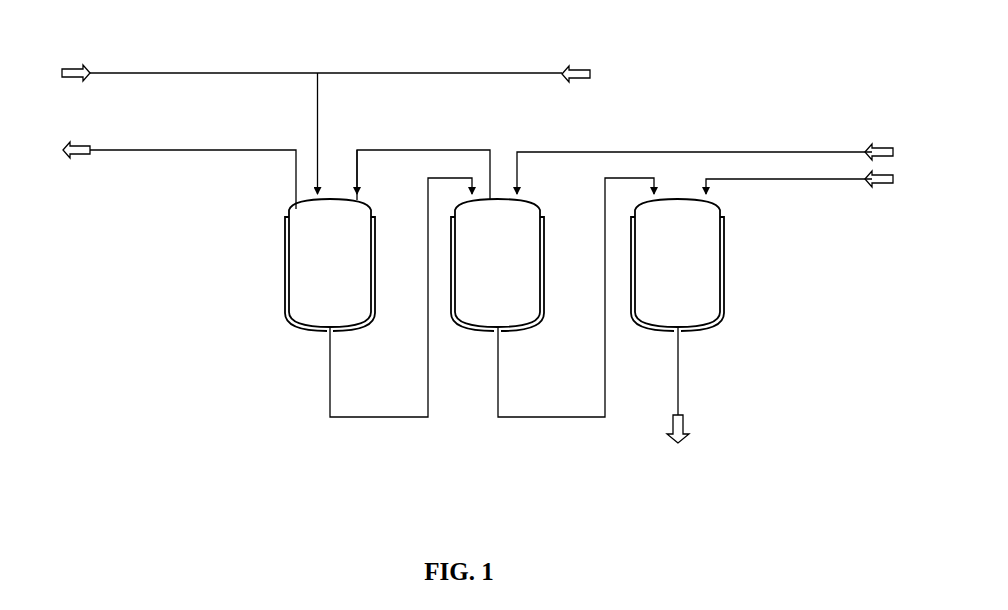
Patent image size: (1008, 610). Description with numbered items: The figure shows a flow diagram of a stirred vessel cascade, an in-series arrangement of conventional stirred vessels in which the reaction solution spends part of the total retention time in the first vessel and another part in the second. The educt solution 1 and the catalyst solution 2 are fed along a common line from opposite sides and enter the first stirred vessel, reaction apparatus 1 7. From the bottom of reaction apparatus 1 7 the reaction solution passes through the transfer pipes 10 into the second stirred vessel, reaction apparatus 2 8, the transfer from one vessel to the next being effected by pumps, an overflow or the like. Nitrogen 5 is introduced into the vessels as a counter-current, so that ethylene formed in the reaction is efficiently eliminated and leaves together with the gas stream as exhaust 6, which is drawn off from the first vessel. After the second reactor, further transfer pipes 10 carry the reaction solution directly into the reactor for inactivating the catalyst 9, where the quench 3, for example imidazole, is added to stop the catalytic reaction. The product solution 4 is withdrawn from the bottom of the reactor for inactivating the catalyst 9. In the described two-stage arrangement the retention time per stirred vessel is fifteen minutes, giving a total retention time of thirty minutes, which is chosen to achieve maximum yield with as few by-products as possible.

The educt solution 1 is at (586, 74).
The catalyst solution 2 is at (300, 129).
The quench 3 is at (810, 182).
The product solution 4 is at (678, 396).
The nitrogen 5 is at (715, 169).
The exhaust 6 is at (167, 175).
The reaction apparatus 1 7 is at (387, 240).
The reaction apparatus 2 8 is at (497, 265).
The reactor for inactivating the catalyst 9 is at (677, 265).
The transfer pipes 10 is at (446, 438).